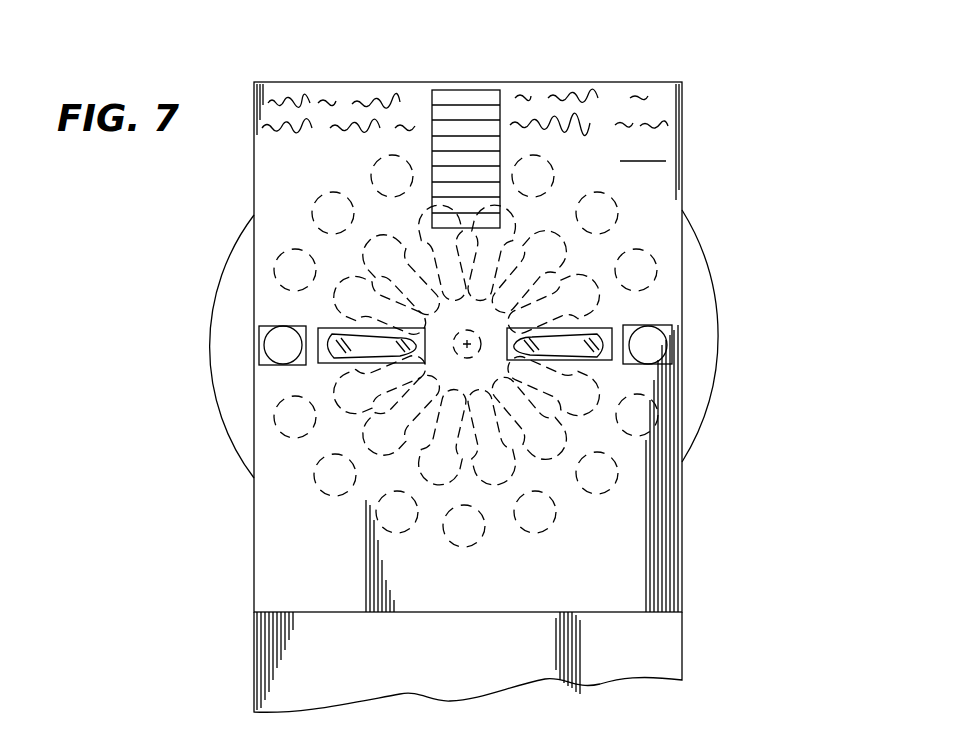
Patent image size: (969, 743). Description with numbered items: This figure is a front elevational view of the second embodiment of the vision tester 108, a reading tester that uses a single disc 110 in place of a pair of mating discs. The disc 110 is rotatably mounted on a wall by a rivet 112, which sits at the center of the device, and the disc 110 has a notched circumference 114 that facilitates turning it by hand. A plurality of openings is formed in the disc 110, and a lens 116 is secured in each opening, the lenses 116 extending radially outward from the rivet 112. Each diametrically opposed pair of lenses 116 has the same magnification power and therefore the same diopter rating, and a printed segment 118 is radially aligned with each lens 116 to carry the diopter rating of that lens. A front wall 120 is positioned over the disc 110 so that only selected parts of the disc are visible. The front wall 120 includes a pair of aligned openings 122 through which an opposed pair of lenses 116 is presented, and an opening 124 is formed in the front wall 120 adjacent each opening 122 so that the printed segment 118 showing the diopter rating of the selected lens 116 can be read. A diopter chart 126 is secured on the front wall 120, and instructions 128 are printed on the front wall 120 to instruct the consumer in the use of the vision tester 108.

The vision tester 108 is at (692, 171).
The disc 110 is at (235, 362).
The rivet 112 is at (481, 351).
The notched circumference 114 is at (712, 398).
The lens 116 is at (532, 228).
The printed segment 118 is at (338, 190).
The front wall 120 is at (643, 147).
The aligned openings 122 is at (300, 365).
The opening 124 is at (259, 333).
The diopter chart 126 is at (457, 90).
The instructions 128 is at (566, 96).